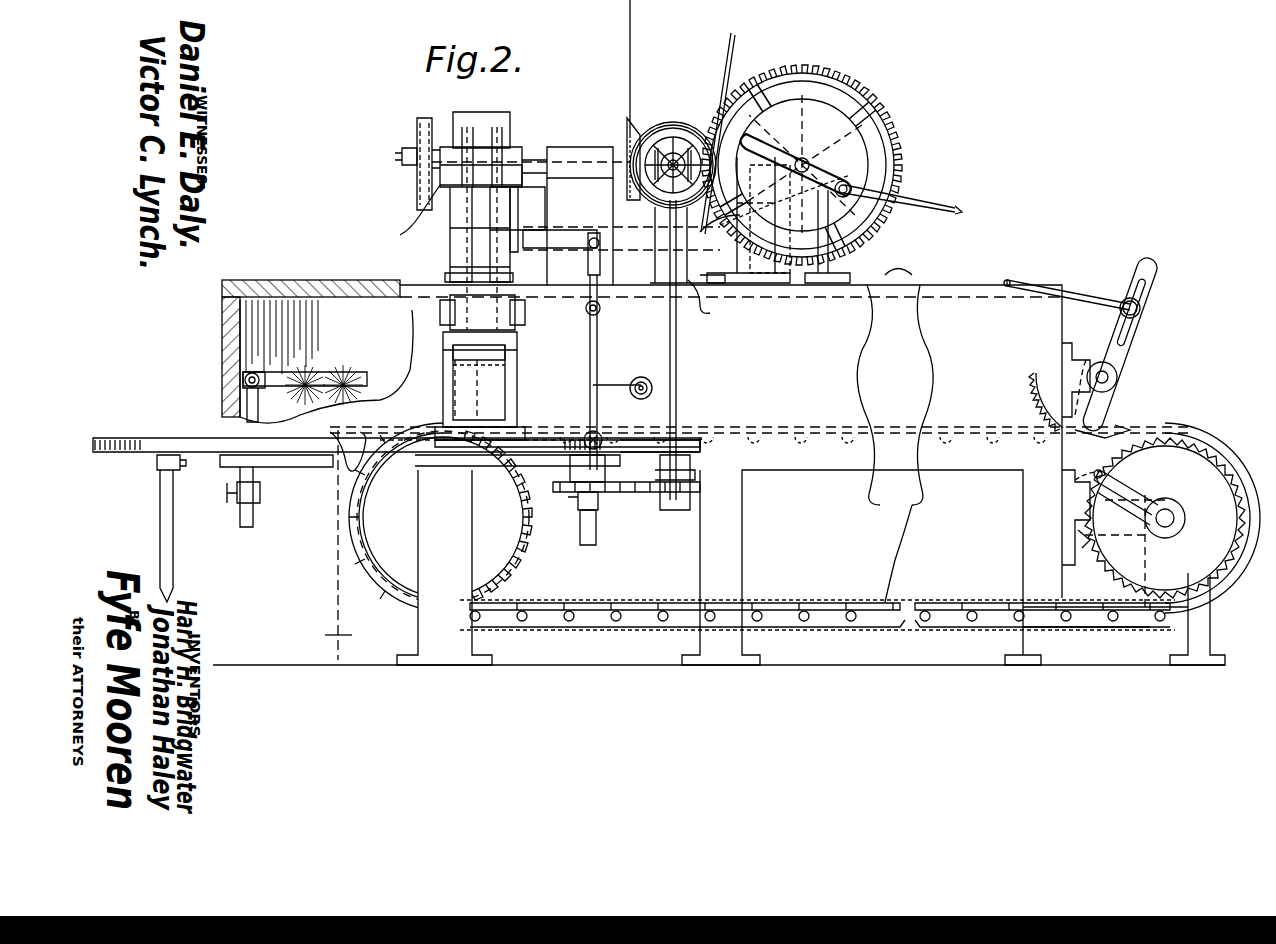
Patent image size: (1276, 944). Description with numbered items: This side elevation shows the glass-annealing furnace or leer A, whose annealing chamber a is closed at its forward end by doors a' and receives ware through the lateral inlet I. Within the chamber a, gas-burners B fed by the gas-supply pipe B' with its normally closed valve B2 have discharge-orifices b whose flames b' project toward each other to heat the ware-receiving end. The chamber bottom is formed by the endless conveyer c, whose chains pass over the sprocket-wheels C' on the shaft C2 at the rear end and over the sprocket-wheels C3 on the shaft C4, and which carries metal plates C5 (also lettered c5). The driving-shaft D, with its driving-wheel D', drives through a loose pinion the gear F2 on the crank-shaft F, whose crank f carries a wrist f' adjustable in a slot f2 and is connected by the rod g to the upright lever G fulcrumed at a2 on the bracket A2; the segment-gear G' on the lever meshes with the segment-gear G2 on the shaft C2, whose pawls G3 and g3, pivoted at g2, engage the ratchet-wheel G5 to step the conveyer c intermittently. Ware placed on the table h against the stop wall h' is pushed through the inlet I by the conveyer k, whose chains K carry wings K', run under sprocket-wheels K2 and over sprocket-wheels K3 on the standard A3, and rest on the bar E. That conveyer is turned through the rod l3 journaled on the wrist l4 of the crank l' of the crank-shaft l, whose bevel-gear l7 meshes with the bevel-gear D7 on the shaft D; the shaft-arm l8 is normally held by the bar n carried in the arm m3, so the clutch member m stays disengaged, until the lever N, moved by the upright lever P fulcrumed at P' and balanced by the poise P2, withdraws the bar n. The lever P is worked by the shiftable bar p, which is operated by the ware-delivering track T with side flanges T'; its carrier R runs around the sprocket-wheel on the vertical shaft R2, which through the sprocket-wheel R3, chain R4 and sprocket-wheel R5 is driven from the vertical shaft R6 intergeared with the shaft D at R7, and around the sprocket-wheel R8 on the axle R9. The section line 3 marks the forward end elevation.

The glass-annealing furnace A is at (875, 286).
The annealing chamber a is at (622, 275).
The doors a' is at (295, 351).
The gas-burners B is at (305, 377).
The discharge-orifices b is at (293, 365).
The flames b' is at (343, 363).
The endless track T is at (396, 455).
The flanges T' is at (678, 422).
The sprocket-wheel R8 is at (160, 470).
The axle R9 is at (160, 550).
The gas-supply pipe B' is at (240, 515).
The valve B2 is at (260, 490).
The section line 3 is at (458, 240).
The endless chain R is at (352, 475).
The sprocket-wheels C3 is at (523, 565).
The shaft C4 is at (435, 517).
The metal plates C5 is at (357, 542).
The endless conveyer c is at (882, 602).
The metal plates c5 is at (912, 505).
The endless chains K is at (465, 234).
The endless conveyer k is at (481, 207).
The wings K' is at (461, 218).
The sprocket-wheels K2 is at (515, 300).
The sprocket-wheels K3 is at (450, 178).
The rod l3 is at (443, 172).
The standard A3 is at (443, 205).
The crank l' is at (415, 148).
The wrist l4 is at (402, 157).
The crank-shaft l is at (531, 188).
The bevel-gear l7 is at (627, 125).
The shaft-arm l8 is at (523, 220).
The bar n is at (535, 242).
The lever-arm m3 is at (605, 240).
The lever N is at (600, 258).
The metal bar E is at (517, 345).
The upright wall h' is at (500, 376).
The inlet I is at (453, 355).
The table h is at (540, 417).
The bar p is at (565, 438).
The upright lever P is at (615, 372).
The fulcrum P' is at (610, 308).
The poise P2 is at (640, 377).
The shaft R6 is at (678, 366).
The intergearing R7 is at (709, 300).
The sprocket-wheel R5 is at (690, 495).
The chain R4 is at (635, 492).
The sprocket-wheel R3 is at (605, 492).
The shaft R2 is at (590, 545).
The driving-wheel D' is at (673, 148).
The driving-shaft D is at (687, 165).
The bevel-gear D7 is at (685, 110).
The gear F2 is at (860, 105).
The clutch member m is at (770, 219).
The crank-shaft F is at (880, 152).
The crank f is at (893, 154).
The wrist f' is at (902, 189).
The slot f2 is at (905, 175).
The pitman g is at (1007, 280).
The upright lever G is at (1129, 344).
The fulcrum a2 is at (1118, 382).
The bracket A2 is at (1086, 360).
The segment-gear G' is at (1046, 388).
The pawl G3 is at (1110, 437).
The sprocket-wheels C' is at (1116, 522).
The shaft C2 is at (1185, 520).
The pivot g2 is at (1125, 490).
The pawl g3 is at (1078, 532).
The segment-gear G2 is at (1090, 468).
The ratchet-wheel G5 is at (1225, 575).